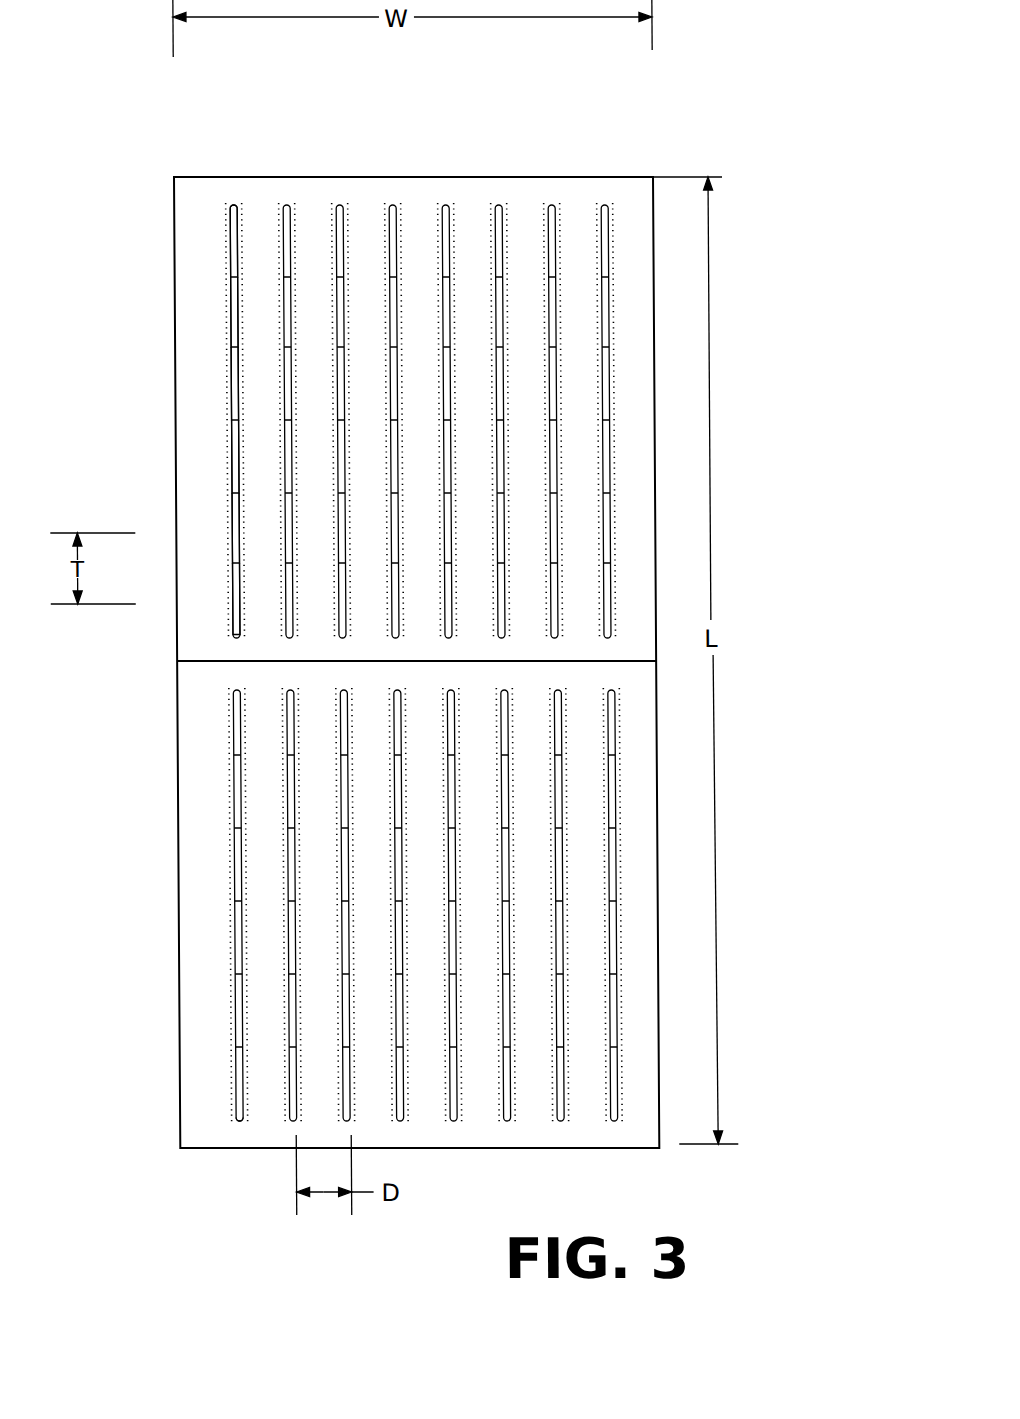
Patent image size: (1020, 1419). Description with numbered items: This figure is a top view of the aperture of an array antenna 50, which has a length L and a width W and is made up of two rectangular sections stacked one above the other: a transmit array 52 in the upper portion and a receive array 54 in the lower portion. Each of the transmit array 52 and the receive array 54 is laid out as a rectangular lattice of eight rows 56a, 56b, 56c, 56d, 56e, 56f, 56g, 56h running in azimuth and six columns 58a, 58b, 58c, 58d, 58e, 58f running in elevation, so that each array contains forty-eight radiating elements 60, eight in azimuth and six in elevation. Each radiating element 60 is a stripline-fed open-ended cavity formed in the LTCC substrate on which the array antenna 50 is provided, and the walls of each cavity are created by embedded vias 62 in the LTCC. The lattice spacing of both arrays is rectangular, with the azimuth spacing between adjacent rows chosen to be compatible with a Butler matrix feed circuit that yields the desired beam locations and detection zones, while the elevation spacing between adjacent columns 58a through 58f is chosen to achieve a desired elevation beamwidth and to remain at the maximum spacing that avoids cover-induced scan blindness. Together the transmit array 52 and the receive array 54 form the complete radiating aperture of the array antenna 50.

The array antenna 50 is at (808, 294).
The transmit array 52 is at (748, 167).
The receive array 54 is at (753, 667).
The row 56a is at (235, 184).
The row 56b is at (288, 184).
The row 56c is at (342, 184).
The row 56d is at (395, 184).
The row 56e is at (448, 184).
The row 56f is at (501, 184).
The row 56g is at (554, 184).
The row 56h is at (607, 184).
The column 58a is at (198, 250).
The column 58b is at (197, 299).
The column 58c is at (197, 380).
The column 58d is at (198, 446).
The column 58e is at (198, 514).
The column 58f is at (197, 623).
The radiating element 60 is at (217, 212).
The embedded vias 62 is at (217, 700).